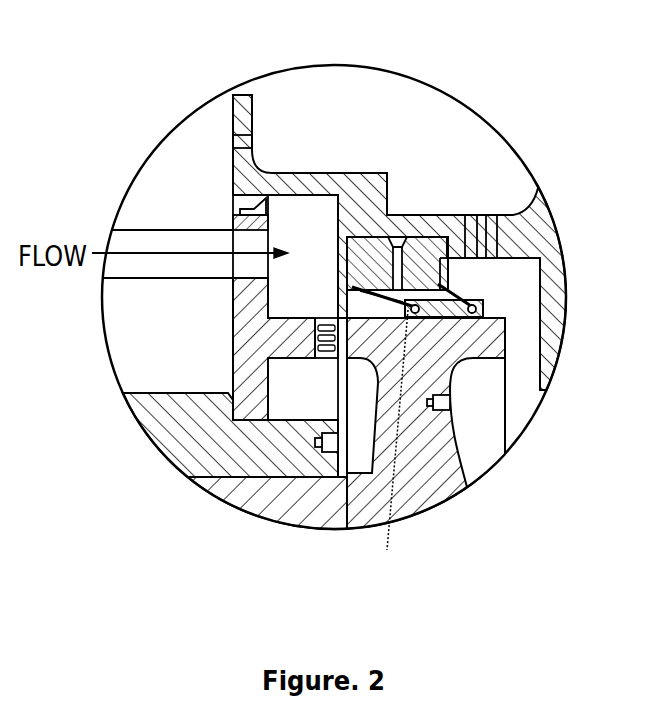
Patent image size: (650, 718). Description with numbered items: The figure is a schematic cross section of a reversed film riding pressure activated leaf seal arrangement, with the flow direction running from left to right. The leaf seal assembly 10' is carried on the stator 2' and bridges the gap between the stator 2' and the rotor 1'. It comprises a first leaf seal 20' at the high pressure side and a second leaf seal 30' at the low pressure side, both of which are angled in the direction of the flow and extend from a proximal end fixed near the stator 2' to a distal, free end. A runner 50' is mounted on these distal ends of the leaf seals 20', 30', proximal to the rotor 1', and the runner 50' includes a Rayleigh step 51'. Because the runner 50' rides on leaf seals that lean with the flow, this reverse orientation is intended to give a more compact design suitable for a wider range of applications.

The rotor 1' is at (314, 423).
The stator 2' is at (399, 209).
The leaf seal assembly 10' is at (452, 211).
The first leaf seal 20' is at (204, 349).
The second leaf seal 30' is at (511, 277).
The runner 50' is at (484, 334).
The Rayleigh step 51' is at (395, 448).